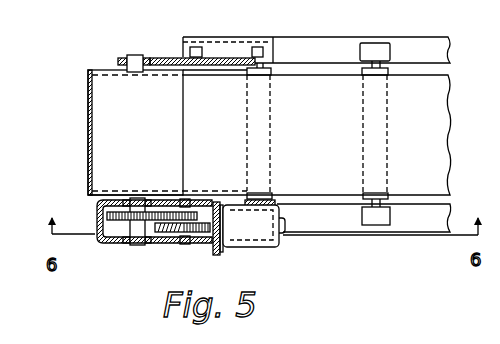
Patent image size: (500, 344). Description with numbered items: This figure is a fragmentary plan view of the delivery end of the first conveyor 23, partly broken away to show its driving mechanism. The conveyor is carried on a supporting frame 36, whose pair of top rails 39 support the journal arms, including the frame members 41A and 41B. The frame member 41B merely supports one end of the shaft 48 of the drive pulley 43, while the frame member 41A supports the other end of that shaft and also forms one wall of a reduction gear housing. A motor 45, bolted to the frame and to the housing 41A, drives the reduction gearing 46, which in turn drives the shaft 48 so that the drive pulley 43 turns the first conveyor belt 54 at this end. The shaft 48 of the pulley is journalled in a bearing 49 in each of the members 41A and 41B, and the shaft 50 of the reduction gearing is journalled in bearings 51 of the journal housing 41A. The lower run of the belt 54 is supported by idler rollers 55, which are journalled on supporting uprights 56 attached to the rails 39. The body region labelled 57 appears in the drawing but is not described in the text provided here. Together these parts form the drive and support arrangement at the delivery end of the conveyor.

The first conveyor 23 is at (428, 32).
The supporting frame 36 is at (318, 35).
The top rails 39 is at (450, 50).
The journal arm (frame member) 41A is at (105, 244).
The journal arm (frame member) 41B is at (163, 58).
The drive pulley 43 is at (103, 113).
The motor 45 is at (276, 247).
The reduction gearing 46 is at (165, 240).
The shaft 48 is at (134, 55).
The bearing 49 is at (125, 58).
The shaft 50 is at (213, 247).
The bearings 51 is at (190, 199).
The first conveyor belt 54 is at (332, 98).
The idler rollers 55 is at (266, 127).
The supporting uprights 56 is at (378, 45).
The body 57 is at (447, 125).